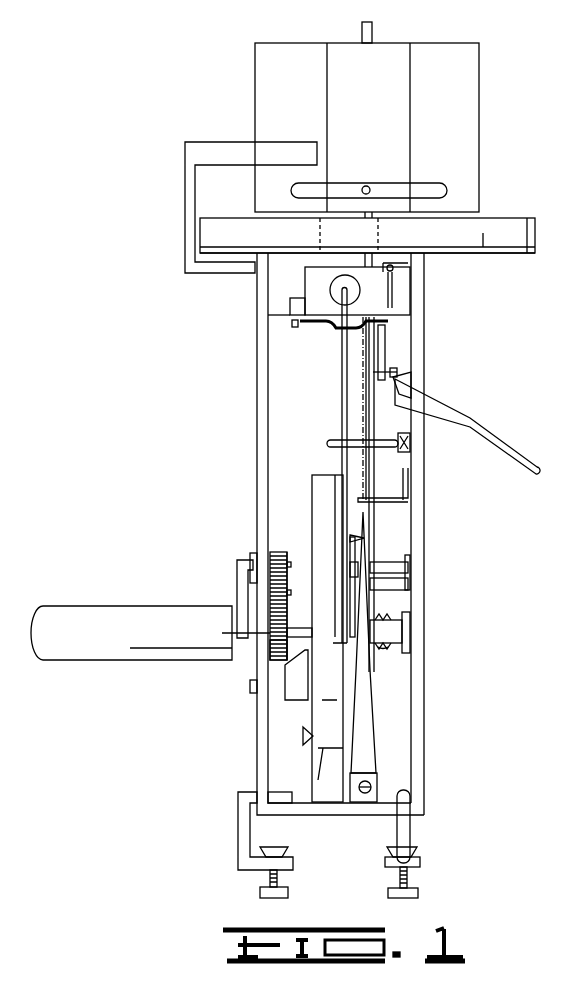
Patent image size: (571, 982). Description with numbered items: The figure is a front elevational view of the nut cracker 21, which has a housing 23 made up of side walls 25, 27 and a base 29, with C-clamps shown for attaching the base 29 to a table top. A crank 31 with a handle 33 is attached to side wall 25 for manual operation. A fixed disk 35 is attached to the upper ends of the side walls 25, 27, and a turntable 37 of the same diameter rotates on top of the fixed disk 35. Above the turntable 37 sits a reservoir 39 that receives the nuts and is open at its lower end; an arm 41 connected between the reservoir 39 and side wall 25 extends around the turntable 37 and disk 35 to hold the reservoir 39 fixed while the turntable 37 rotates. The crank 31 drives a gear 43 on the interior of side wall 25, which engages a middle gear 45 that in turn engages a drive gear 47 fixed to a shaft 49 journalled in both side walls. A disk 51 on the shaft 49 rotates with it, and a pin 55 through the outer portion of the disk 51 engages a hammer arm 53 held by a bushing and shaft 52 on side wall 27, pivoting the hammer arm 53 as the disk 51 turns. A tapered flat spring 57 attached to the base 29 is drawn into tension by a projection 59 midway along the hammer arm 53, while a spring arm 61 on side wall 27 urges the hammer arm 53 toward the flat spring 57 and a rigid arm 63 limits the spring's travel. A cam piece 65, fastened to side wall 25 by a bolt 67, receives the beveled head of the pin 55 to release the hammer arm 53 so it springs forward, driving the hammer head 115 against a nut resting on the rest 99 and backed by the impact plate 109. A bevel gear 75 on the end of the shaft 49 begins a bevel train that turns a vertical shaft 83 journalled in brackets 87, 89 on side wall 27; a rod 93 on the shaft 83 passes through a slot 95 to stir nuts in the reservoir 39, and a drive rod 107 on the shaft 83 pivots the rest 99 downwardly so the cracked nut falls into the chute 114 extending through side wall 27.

The nut cracker 21 is at (158, 130).
The housing 23 is at (204, 425).
The side wall 25 is at (263, 485).
The side wall 27 is at (418, 545).
The base 29 is at (372, 808).
The crank 31 is at (243, 580).
The handle 33 is at (122, 645).
The fixed disk 35 is at (495, 252).
The turntable 37 is at (507, 227).
The reservoir 39 is at (443, 57).
The arm 41 is at (192, 180).
The gear 43 is at (280, 550).
The middle gear 45 is at (296, 583).
The drive gear 47 is at (277, 636).
The shaft 49 is at (280, 653).
The disk 51 is at (322, 772).
The bushing and shaft 52 is at (388, 630).
The hammer arm 53 is at (341, 388).
The pin 55 is at (303, 735).
The flat spring 57 is at (367, 758).
The projection 59 is at (372, 538).
The spring arm 61 is at (327, 443).
The rigid arm 63 is at (395, 568).
The cam piece 65 is at (287, 688).
The bolt 67 is at (250, 687).
The bevel gear 75 is at (385, 647).
The shaft 83 is at (368, 413).
The bracket 87 is at (408, 587).
The bracket 89 is at (408, 478).
The rod 93 is at (363, 187).
The slot 95 is at (418, 188).
The rest 99 is at (300, 326).
The drive rod 107 is at (393, 372).
The impact plate 109 is at (403, 300).
The chute 114 is at (453, 413).
The hammer head 115 is at (330, 286).